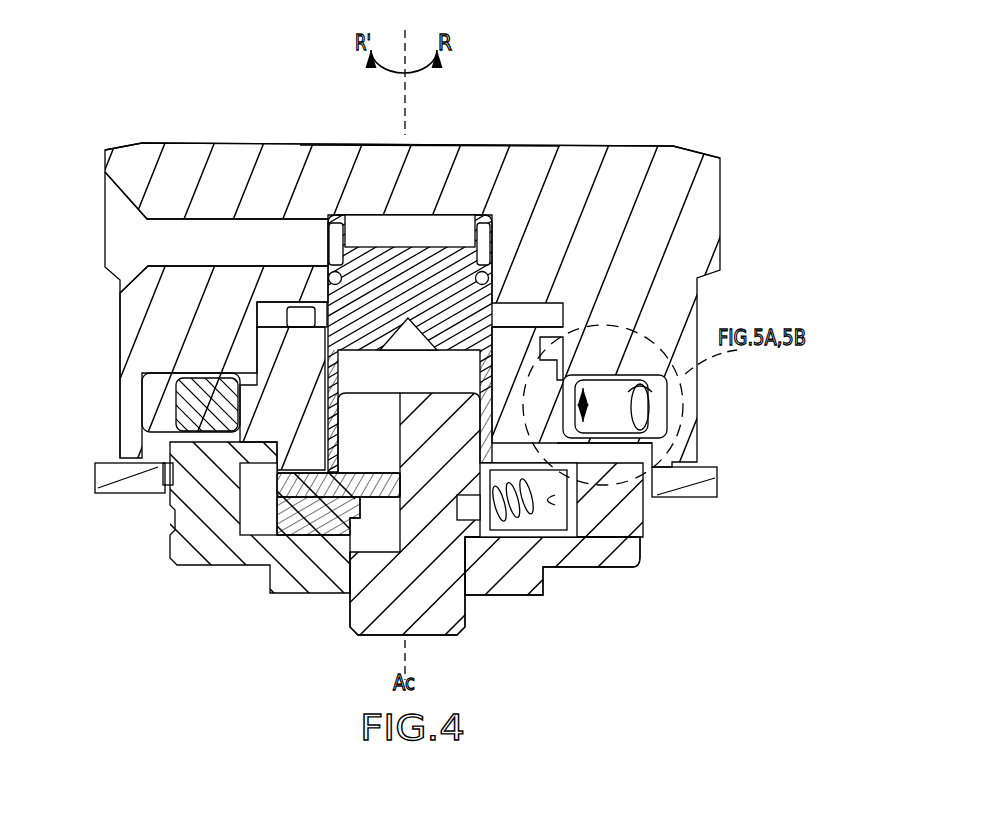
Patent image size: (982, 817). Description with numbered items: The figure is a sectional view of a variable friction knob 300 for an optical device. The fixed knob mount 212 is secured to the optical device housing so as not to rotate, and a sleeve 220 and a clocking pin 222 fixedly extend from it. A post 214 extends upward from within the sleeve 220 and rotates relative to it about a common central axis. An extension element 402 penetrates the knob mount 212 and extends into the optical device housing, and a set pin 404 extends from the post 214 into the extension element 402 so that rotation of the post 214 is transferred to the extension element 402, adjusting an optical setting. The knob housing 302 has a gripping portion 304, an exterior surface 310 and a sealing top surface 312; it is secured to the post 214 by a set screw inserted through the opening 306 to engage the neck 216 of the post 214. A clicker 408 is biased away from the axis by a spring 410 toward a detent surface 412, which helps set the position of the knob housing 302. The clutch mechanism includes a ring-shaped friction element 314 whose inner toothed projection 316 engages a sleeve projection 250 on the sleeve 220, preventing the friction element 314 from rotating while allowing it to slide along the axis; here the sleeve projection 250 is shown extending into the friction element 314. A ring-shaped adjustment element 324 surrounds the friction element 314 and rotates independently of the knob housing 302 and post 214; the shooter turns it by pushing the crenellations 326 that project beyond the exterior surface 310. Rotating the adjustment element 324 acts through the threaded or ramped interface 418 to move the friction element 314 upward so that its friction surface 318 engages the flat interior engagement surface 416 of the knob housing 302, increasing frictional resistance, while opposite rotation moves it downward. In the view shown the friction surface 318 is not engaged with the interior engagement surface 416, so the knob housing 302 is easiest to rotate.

The variable friction knob 300 is at (684, 102).
The knob housing 302 is at (536, 148).
The gripping portion 304 is at (726, 197).
The opening 306 is at (180, 248).
The exterior surface 310 is at (114, 341).
The top surface 312 is at (452, 143).
The friction element 314 is at (648, 398).
The toothed projection 316 is at (234, 410).
The friction surface 318 is at (560, 360).
The adjustment element 324 is at (663, 411).
The crenellations 326 is at (712, 483).
The knob mount 212 is at (518, 593).
The post 214 is at (363, 257).
The neck 216 is at (326, 245).
The sleeve 220 is at (185, 556).
The clocking pin 222 is at (292, 312).
The sleeve projection 250 is at (168, 486).
The extension element 402 is at (355, 626).
The set pin 404 is at (283, 500).
The clicker 408 is at (552, 515).
The spring 410 is at (533, 522).
The detent surface 412 is at (566, 508).
The interior engagement surface 416 is at (186, 376).
The interface 418 is at (655, 423).